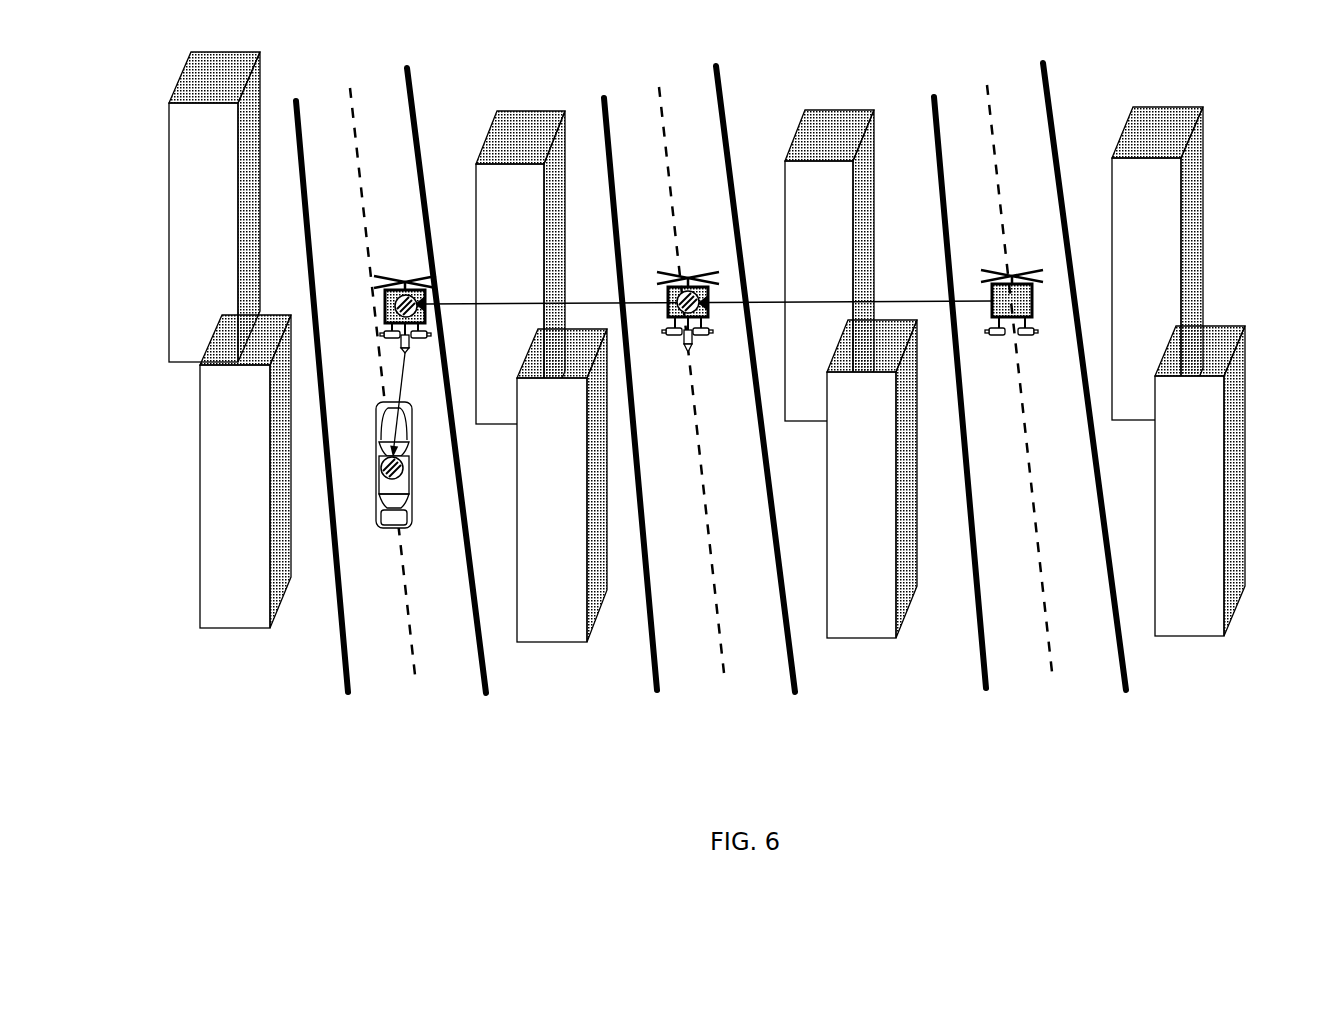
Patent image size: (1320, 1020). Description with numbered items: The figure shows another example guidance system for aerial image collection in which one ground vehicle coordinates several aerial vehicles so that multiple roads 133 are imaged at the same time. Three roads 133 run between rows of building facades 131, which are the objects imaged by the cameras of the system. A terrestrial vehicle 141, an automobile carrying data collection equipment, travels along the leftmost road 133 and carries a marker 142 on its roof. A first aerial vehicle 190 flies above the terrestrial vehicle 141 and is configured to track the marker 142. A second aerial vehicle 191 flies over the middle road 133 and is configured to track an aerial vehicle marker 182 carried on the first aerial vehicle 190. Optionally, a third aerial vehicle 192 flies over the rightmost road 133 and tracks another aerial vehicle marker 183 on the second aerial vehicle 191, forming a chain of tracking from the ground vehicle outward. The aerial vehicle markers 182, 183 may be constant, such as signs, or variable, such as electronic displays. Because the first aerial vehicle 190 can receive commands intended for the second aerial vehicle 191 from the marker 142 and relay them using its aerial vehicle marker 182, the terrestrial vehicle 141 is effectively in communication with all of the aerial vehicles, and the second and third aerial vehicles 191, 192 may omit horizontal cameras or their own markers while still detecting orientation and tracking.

The building facade 131 is at (707, 347).
The road 133 is at (477, 637).
The terrestrial vehicle 141 is at (388, 526).
The marker 142 is at (405, 474).
The aerial vehicle marker 182 is at (385, 305).
The aerial vehicle marker 183 is at (668, 296).
The first aerial vehicle 190 is at (403, 268).
The second aerial vehicle 191 is at (697, 260).
The third aerial vehicle 192 is at (1026, 256).